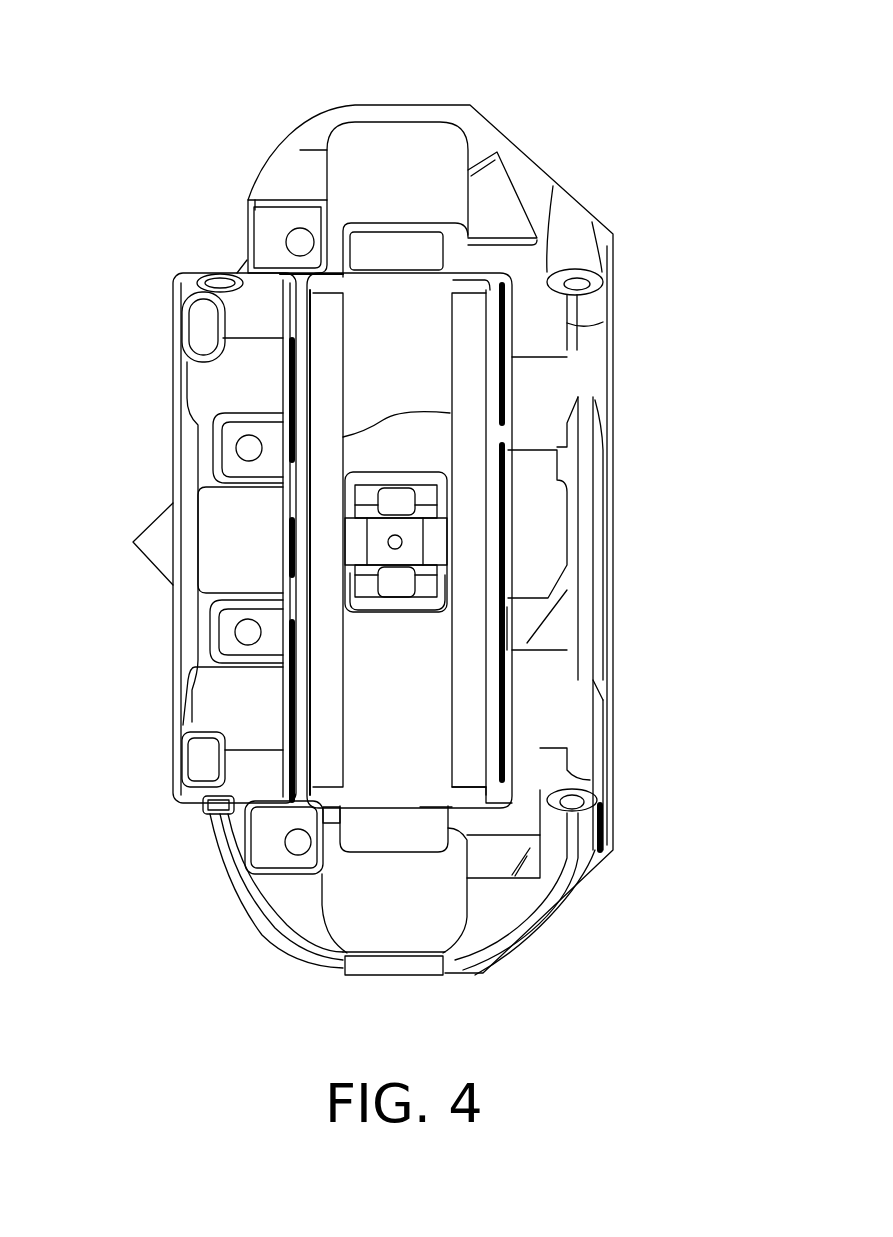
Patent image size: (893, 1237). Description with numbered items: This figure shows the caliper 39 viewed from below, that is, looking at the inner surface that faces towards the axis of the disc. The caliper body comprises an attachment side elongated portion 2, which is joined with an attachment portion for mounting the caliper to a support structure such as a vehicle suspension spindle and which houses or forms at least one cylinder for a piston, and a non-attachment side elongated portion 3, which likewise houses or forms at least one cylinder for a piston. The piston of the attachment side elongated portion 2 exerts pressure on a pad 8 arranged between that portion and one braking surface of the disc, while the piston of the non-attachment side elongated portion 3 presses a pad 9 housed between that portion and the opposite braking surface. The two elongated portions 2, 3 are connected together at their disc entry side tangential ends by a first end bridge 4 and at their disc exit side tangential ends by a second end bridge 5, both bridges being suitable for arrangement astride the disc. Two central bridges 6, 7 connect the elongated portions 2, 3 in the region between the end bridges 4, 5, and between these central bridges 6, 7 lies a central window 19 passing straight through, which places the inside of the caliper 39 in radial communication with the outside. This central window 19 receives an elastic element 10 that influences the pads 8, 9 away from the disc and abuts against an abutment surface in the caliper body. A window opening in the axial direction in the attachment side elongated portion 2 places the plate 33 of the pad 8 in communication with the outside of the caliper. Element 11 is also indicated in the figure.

The attachment side elongated portion 2 is at (225, 573).
The non-attachment side elongated portion 3 is at (583, 537).
The first end bridge 4 is at (417, 143).
The second end bridge 5 is at (417, 917).
The central bridge 6 is at (407, 437).
The central bridge 7 is at (398, 647).
The pad 8 is at (327, 777).
The pad 9 is at (475, 778).
The elastic element 10 is at (377, 547).
The right cable 11 is at (530, 903).
The central window 19 is at (400, 503).
The plate 33 is at (305, 790).
The caliper 39 is at (600, 160).